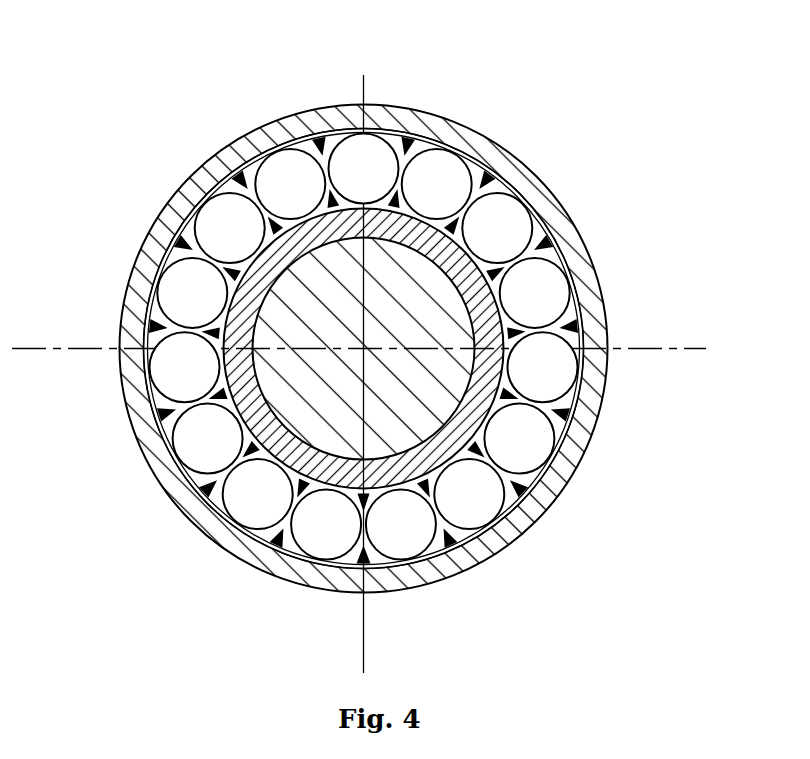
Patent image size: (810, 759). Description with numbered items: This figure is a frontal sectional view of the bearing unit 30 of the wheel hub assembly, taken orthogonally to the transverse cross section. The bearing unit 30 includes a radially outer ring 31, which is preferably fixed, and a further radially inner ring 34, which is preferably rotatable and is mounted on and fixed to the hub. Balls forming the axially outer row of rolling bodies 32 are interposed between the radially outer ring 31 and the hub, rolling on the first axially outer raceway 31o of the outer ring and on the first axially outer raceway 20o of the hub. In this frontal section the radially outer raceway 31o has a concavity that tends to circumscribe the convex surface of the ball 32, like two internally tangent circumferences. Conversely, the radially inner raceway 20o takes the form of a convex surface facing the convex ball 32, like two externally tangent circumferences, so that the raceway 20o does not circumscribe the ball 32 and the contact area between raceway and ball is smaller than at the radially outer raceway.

The bearing unit 30 is at (619, 96).
The radially outer ring 31 is at (198, 507).
The first axially outer raceway 31o is at (463, 217).
The axially outer row of rolling bodies 32 is at (188, 278).
The further radially inner ring 34 is at (317, 227).
The first axially outer raceway 20o is at (567, 413).